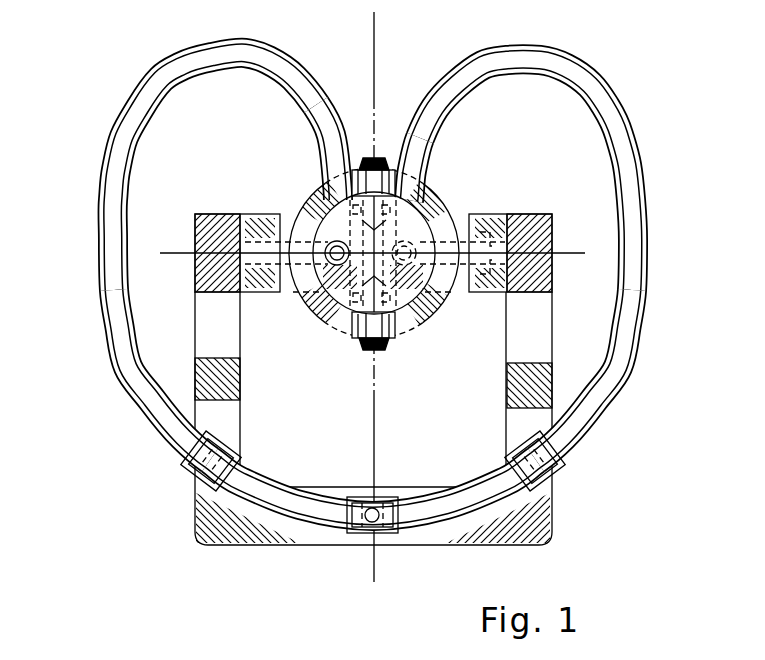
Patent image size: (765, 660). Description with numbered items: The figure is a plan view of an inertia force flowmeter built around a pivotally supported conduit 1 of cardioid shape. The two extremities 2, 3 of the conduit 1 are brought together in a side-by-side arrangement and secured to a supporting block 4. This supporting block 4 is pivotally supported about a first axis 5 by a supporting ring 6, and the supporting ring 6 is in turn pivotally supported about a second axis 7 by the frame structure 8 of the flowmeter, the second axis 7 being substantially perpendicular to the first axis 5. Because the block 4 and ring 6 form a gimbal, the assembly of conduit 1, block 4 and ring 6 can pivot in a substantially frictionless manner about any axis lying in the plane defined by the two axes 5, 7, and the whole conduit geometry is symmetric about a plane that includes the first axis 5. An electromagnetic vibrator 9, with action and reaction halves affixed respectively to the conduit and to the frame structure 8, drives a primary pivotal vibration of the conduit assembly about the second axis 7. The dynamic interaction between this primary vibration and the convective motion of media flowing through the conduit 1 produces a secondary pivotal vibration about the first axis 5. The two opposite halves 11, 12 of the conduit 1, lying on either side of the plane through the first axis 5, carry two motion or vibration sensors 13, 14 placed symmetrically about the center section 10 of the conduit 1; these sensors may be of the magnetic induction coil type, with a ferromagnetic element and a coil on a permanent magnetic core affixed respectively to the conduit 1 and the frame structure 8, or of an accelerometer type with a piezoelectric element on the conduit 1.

The conduit 1 is at (98, 263).
The extremity 2 is at (337, 143).
The extremity 3 is at (405, 140).
The supporting block 4 is at (422, 330).
The first axis 5 is at (374, 432).
The supporting ring 6 is at (325, 330).
The second axis 7 is at (577, 250).
The frame structure 8 is at (492, 212).
The electromagnetic vibrator 9 is at (348, 516).
The center section 10 is at (410, 527).
The half of the conduit 11 is at (142, 366).
The half of the conduit 12 is at (606, 372).
The motion or vibration sensor 13 is at (200, 476).
The motion or vibration sensor 14 is at (543, 482).